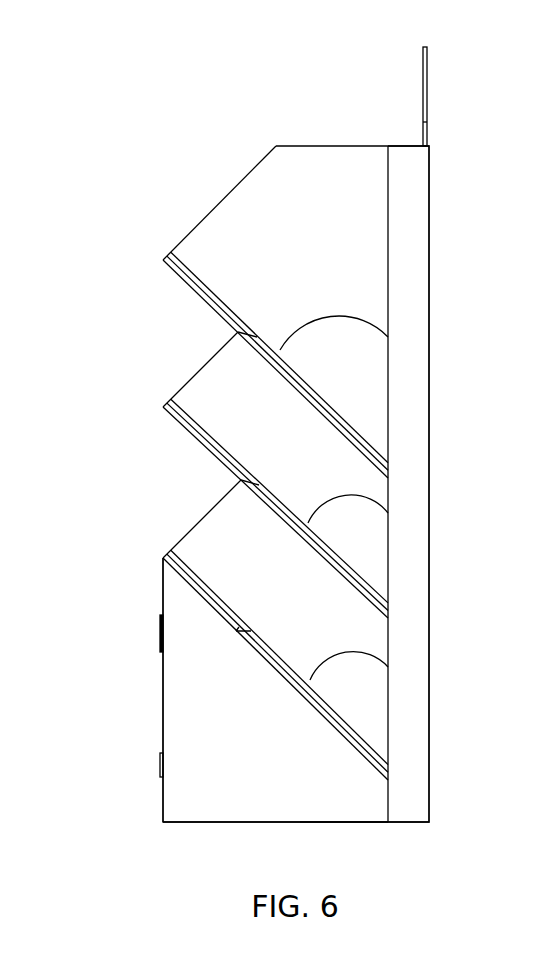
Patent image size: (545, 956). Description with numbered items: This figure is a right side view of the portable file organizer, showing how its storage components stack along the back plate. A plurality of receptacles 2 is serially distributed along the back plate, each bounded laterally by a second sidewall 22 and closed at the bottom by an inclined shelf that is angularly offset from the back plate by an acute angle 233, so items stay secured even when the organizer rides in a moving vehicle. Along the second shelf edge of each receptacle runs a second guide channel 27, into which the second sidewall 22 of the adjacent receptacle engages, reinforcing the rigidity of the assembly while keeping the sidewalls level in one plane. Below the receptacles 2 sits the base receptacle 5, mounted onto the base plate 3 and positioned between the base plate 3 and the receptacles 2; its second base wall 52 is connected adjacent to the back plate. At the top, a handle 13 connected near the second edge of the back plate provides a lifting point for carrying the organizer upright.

The handle 13 is at (450, 106).
The plurality of receptacles 2 is at (137, 350).
The acute angle 233 is at (333, 315).
The second guide channel 27 is at (255, 339).
The base receptacle 5 is at (127, 748).
The base plate 3 is at (183, 832).
The second base wall 52 is at (360, 817).
The second sidewall 22 is at (418, 758).